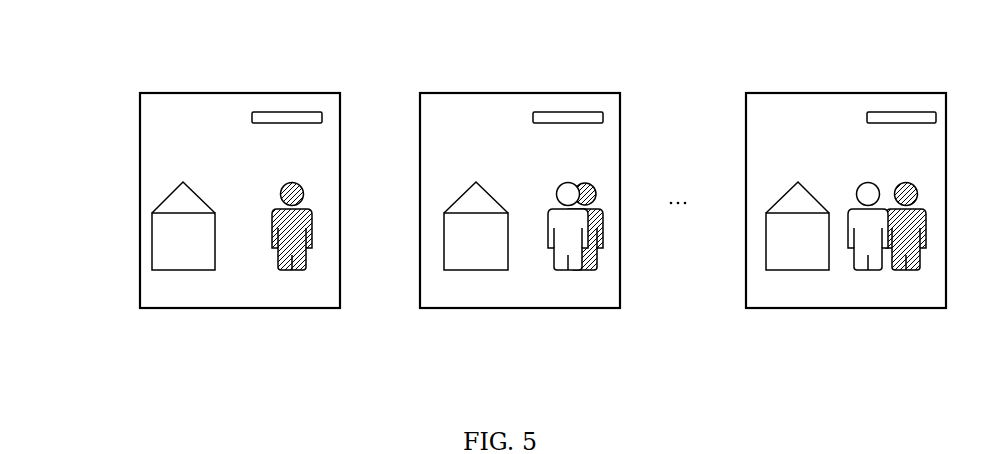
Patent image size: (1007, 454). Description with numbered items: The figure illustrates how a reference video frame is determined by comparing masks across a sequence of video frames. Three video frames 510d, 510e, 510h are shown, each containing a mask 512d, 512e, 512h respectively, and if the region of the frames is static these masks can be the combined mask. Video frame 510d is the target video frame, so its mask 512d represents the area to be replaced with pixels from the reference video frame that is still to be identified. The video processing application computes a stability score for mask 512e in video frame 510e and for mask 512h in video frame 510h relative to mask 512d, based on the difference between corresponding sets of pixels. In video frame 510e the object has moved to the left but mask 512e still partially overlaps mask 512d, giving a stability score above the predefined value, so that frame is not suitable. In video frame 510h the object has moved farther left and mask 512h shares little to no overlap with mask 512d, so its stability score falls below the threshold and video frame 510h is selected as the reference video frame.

The video frame 510d is at (132, 90).
The video frame 510e is at (423, 90).
The video frame 510h is at (745, 90).
The mask 512d is at (905, 178).
The mask 512e is at (547, 240).
The mask 512h is at (865, 238).